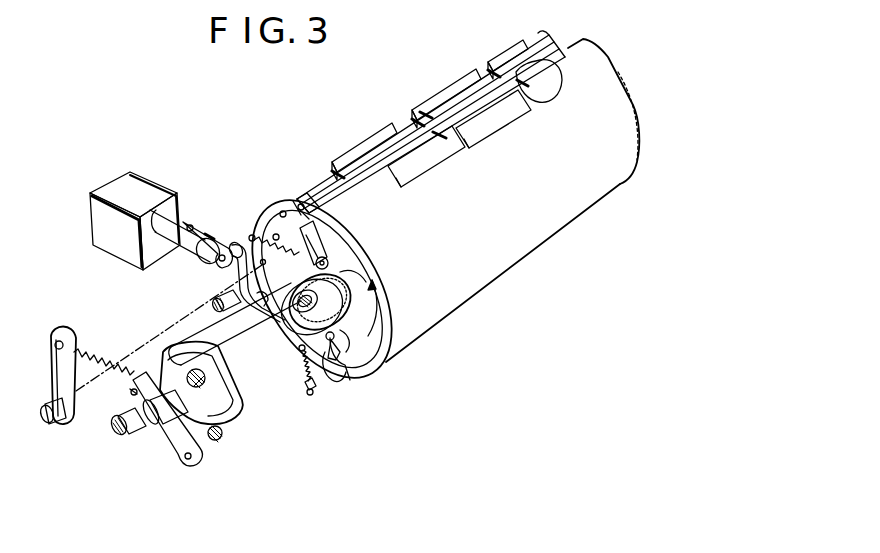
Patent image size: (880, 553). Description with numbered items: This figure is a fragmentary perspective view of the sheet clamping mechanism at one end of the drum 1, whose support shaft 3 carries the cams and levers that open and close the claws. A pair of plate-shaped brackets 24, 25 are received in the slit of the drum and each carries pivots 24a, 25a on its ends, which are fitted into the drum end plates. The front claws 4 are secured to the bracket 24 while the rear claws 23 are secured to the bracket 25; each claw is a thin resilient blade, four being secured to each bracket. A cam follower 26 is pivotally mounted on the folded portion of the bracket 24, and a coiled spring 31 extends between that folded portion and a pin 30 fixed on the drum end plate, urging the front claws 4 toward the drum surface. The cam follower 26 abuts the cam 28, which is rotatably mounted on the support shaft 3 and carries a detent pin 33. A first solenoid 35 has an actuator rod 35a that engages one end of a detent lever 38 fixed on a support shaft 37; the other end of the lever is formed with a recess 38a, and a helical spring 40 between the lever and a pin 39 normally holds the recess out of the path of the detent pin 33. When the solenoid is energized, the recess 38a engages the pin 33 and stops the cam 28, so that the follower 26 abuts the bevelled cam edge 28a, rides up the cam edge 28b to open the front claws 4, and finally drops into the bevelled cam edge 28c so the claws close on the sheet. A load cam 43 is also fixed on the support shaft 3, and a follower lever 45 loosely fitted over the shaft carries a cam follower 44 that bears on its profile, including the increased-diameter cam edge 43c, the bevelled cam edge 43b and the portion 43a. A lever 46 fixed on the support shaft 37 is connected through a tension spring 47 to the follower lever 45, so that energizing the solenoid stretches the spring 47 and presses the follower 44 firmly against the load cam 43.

The drum 1 is at (540, 232).
The support shaft 3 is at (118, 428).
The front claws 4 is at (409, 170).
The rear claws 23 is at (398, 130).
The bracket 24 is at (326, 242).
The pivots 24a is at (300, 186).
The bracket 25 is at (316, 180).
The pivots 25a is at (304, 207).
The cam follower 26 is at (344, 264).
The cam 28 is at (348, 300).
The bevelled cam edge 28a is at (296, 318).
The cam edge 28b is at (343, 338).
The bevelled cam edge 28c is at (378, 276).
The pin 30 is at (246, 252).
The coiled spring 31 is at (278, 250).
The detent pin 33 is at (344, 362).
The first solenoid 35 is at (110, 253).
The actuator rod 35a is at (178, 222).
The support shaft 37 is at (214, 300).
The detent lever 38 is at (222, 240).
The recess 38a is at (344, 386).
The pin 39 is at (304, 395).
The helical spring 40 is at (300, 374).
The load cam 43 is at (232, 418).
The cam plate pivot 43a is at (240, 398).
The bevelled cam edge 43b is at (190, 340).
The cam edge 43c is at (163, 440).
The cam follower 44 is at (216, 441).
The follower lever 45 is at (184, 462).
The lever 46 is at (52, 376).
The tension spring 47 is at (108, 360).